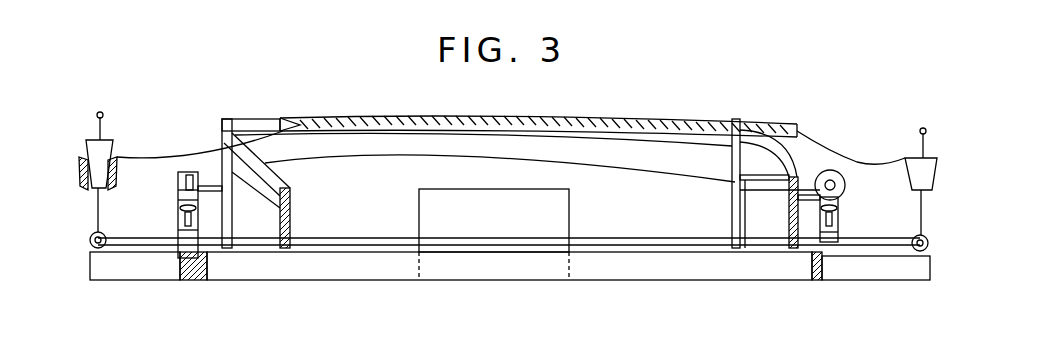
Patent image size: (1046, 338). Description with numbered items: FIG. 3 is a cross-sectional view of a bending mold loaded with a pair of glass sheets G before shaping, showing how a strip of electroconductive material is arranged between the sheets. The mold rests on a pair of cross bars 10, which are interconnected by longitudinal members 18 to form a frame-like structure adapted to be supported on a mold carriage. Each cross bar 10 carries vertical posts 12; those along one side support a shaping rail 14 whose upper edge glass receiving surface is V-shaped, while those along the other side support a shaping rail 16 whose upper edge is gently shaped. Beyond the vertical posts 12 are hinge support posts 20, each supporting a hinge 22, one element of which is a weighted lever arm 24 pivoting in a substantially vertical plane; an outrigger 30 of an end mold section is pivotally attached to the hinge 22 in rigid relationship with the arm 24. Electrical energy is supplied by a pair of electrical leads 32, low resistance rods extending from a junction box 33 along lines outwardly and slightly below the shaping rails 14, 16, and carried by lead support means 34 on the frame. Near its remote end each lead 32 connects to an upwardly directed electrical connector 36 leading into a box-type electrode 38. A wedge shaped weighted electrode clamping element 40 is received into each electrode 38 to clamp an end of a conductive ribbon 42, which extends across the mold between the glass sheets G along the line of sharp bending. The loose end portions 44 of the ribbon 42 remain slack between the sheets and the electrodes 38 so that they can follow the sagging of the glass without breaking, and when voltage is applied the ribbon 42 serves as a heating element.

The cross bar 10 is at (350, 266).
The vertical post 12 is at (795, 228).
The shaping rail 14 is at (273, 195).
The shaping rail 16 is at (790, 202).
The longitudinal member 18 is at (195, 270).
The hinge support post 20 is at (180, 222).
The hinge 22 is at (186, 172).
The lever arm 24 is at (845, 192).
The outrigger 30 is at (722, 184).
The electrical lead 32 is at (362, 237).
The junction box 33 is at (500, 230).
The lead support means 34 is at (90, 240).
The electrical connector 36 is at (96, 211).
The box-type electrode 38 is at (84, 182).
The electrode clamping element 40 is at (92, 142).
The conductive ribbon 42 is at (682, 122).
The loose end portion 44 is at (193, 155).
The glass sheet G is at (583, 116).